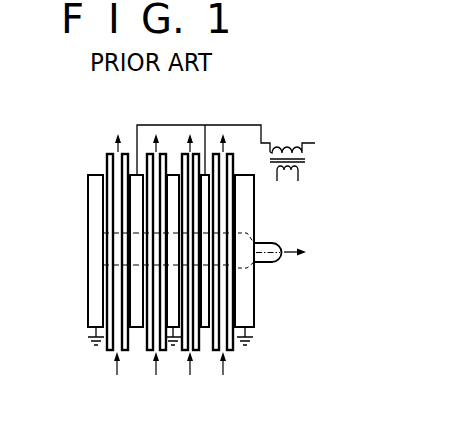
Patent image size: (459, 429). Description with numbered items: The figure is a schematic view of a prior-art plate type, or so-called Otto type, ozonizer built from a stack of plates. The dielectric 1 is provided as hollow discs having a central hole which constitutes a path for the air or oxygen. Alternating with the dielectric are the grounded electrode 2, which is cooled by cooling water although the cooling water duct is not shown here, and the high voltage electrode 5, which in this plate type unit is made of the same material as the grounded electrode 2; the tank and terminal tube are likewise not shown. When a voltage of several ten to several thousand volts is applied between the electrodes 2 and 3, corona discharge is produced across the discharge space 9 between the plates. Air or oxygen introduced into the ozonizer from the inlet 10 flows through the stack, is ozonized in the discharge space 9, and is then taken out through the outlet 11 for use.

The dielectric 1 is at (125, 153).
The grounded electrode 2 is at (93, 312).
The inlet 3 is at (204, 338).
The high voltage electrode 5 is at (134, 329).
The discharge space 9 is at (222, 298).
The inlet 10 is at (231, 351).
The outlet 11 is at (270, 244).